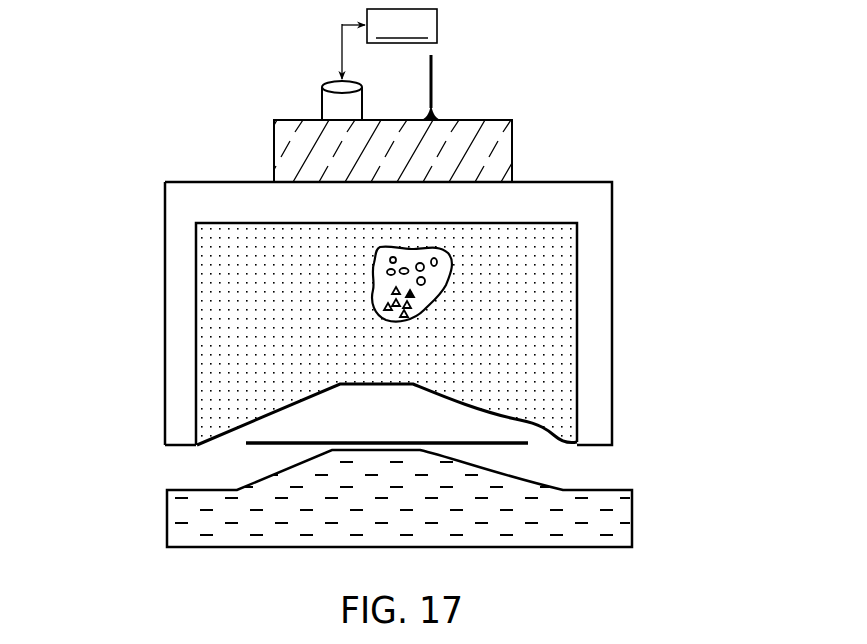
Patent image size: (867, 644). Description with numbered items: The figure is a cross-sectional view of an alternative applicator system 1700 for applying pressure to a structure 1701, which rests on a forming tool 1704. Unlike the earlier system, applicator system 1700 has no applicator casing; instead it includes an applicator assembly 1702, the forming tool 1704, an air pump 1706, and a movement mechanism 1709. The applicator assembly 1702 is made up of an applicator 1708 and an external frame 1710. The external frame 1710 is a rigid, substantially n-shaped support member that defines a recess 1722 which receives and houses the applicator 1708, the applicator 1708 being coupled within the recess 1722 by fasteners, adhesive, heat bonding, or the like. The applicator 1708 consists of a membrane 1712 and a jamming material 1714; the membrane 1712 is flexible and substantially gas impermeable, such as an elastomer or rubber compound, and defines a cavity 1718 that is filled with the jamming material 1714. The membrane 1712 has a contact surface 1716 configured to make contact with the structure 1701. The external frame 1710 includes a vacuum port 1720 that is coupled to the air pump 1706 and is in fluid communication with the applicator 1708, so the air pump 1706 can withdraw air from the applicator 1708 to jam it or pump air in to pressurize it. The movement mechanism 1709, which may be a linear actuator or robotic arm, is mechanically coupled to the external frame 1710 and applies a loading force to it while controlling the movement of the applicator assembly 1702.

The applicator system 1700 is at (542, 35).
The structure 1701 is at (263, 446).
The applicator assembly 1702 is at (593, 216).
The forming tool 1704 is at (543, 548).
The air pump 1706 is at (389, 44).
The applicator 1708 is at (262, 338).
The movement mechanism 1709 is at (433, 80).
The external frame 1710 is at (564, 181).
The membrane 1712 is at (250, 303).
The jamming material 1714 is at (445, 261).
The contact surface 1716 is at (549, 428).
The cavity 1718 is at (421, 294).
The vacuum port 1720 is at (320, 80).
The recess 1722 is at (264, 228).